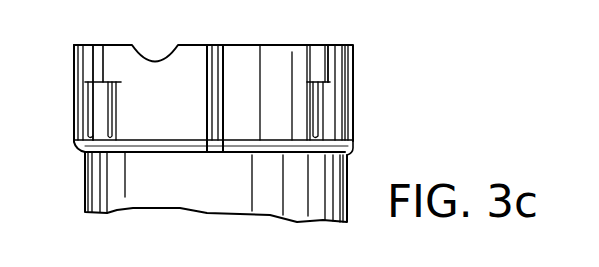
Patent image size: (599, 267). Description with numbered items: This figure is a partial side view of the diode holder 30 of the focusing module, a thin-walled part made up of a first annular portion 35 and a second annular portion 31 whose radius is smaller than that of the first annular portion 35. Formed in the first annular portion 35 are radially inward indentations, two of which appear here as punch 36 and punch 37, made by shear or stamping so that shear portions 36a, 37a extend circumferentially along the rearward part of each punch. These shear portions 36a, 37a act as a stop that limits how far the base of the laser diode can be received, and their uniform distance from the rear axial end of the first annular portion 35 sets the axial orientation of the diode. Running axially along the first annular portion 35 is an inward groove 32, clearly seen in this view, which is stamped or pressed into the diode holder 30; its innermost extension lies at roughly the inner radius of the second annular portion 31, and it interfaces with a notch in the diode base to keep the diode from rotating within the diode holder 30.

The diode holder 30 is at (268, 131).
The second annular portion 31 is at (132, 193).
The groove 32 is at (217, 155).
The first annular portion 35 is at (291, 59).
The punch 36 is at (76, 88).
The shear portion 36a is at (103, 45).
The punch 37 is at (385, 92).
The shear portion 37a is at (332, 82).